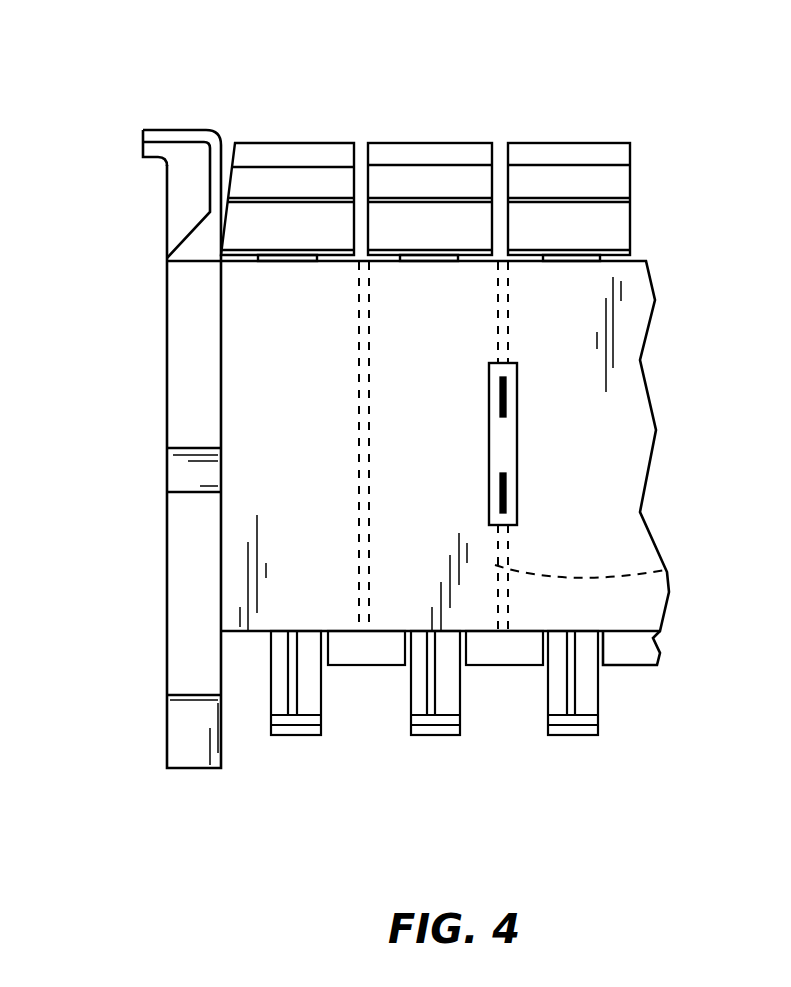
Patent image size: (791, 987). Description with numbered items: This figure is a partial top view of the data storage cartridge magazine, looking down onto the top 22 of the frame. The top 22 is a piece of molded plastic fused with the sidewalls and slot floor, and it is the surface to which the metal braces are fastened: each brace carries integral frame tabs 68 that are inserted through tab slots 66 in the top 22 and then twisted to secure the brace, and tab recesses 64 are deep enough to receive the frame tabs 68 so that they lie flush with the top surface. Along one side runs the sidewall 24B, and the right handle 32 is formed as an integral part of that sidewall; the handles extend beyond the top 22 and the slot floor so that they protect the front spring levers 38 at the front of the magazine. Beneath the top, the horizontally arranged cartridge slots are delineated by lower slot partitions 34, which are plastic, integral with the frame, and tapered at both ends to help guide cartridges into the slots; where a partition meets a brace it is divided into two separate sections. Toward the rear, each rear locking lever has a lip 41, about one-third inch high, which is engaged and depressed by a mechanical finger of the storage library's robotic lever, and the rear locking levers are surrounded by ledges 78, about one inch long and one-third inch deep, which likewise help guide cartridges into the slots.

The top 22 is at (262, 388).
The sidewall 24B is at (185, 724).
The right handle 32 is at (186, 129).
The lower slot partition 34 is at (672, 566).
The front spring lever 38 is at (452, 100).
The lip 41 is at (590, 718).
The tab recess 64 is at (517, 493).
The tab slot 66 is at (497, 412).
The frame tab 68 is at (505, 415).
The ledge 78 is at (368, 655).